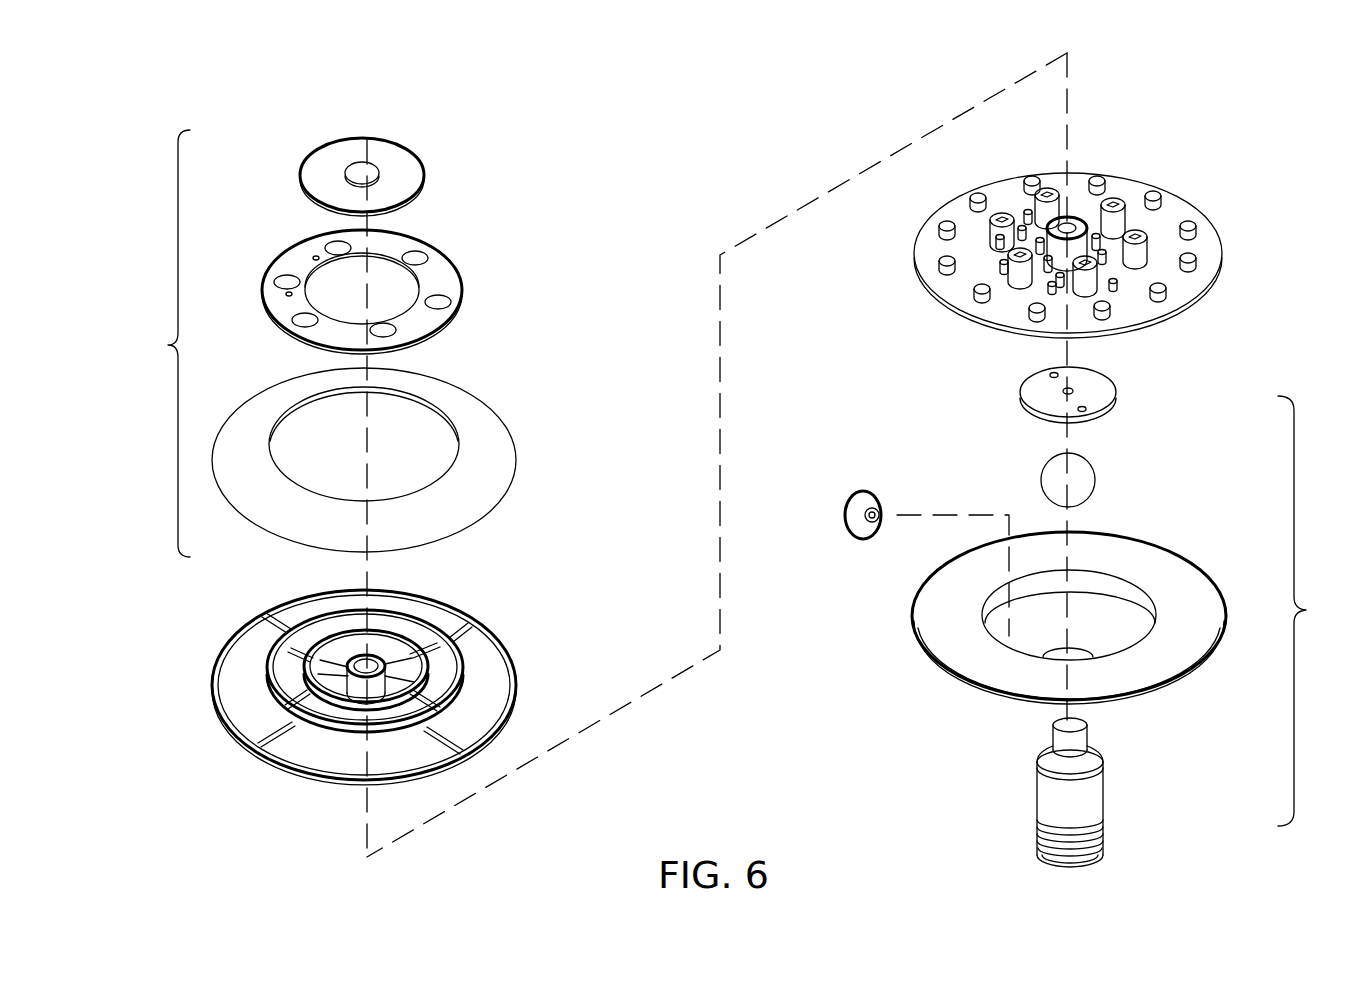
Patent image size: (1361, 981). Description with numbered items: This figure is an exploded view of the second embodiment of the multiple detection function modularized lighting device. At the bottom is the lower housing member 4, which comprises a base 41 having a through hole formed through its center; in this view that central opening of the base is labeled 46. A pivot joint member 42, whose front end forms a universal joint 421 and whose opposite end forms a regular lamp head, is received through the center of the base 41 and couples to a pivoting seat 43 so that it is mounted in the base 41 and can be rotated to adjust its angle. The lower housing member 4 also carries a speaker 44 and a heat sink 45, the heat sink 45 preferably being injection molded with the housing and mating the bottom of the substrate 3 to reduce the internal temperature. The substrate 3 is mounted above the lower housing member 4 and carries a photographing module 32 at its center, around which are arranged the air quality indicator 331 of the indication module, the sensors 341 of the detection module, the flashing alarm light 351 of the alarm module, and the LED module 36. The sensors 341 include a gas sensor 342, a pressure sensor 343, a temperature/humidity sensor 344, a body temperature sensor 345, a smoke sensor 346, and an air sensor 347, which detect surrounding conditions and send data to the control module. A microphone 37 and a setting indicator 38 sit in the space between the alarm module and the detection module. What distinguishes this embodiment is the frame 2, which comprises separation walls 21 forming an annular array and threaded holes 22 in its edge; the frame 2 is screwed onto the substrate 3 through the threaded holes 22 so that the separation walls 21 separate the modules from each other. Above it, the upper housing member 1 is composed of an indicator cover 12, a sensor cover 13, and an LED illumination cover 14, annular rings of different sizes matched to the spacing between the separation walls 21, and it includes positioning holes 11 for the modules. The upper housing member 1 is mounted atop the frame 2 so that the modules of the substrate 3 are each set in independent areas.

The upper housing member 1 is at (327, 343).
The positioning holes 11 is at (413, 256).
The indicator cover 12 is at (398, 165).
The sensor cover 13 is at (450, 282).
The LED illumination cover 14 is at (443, 395).
The frame 2 is at (518, 689).
The separation walls 21 is at (262, 680).
The threaded holes 22 is at (470, 618).
The substrate 3 is at (1218, 238).
The photographing module 32 is at (1090, 250).
The air quality indicator 331 is at (1062, 280).
The sensors 341 is at (1100, 295).
The gas sensor 342 is at (1000, 215).
The pressure sensor 343 is at (1062, 192).
The temperature/humidity sensor 344 is at (1118, 200).
The body temperature sensor 345 is at (1140, 250).
The smoke sensor 346 is at (1088, 272).
The air sensor 347 is at (1008, 268).
The flashing alarm light 351 is at (1003, 264).
The LED module 36 is at (948, 225).
The microphone 37 is at (289, 292).
The setting indicator 38 is at (316, 256).
The lower housing member 4 is at (1086, 617).
The base 41 is at (932, 655).
The pivot joint member 42 is at (1037, 785).
The universal joint 421 is at (1045, 478).
The pivoting seat 43 is at (1020, 390).
The speaker 44 is at (860, 500).
The heat sink 45 is at (942, 595).
The bottom hole 46 is at (1073, 657).